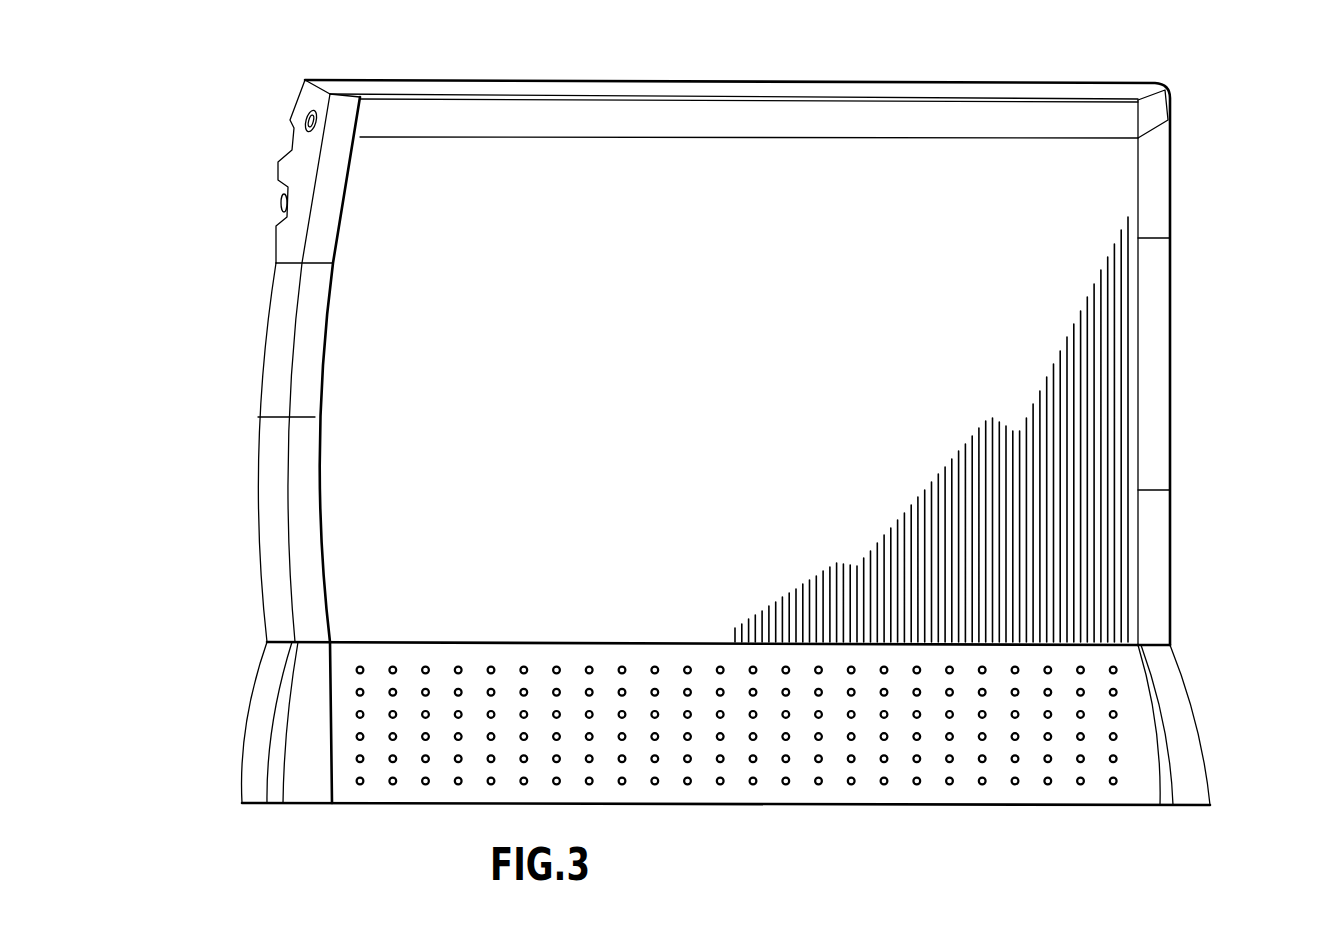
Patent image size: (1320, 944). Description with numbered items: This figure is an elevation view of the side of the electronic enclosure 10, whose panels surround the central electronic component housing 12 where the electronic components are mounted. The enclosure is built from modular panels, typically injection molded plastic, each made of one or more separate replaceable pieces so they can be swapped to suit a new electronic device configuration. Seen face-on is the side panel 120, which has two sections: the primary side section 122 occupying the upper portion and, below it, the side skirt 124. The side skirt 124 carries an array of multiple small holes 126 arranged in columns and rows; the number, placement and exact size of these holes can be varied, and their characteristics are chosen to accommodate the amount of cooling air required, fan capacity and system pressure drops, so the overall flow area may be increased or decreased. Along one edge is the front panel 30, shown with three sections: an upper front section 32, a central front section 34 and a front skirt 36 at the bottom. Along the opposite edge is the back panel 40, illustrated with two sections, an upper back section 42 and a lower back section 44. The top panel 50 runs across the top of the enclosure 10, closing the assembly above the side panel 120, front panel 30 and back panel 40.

The electronic enclosure 10 is at (1213, 68).
The central electronic component housing 12 is at (447, 163).
The front panel 30 is at (268, 476).
The upper front section 32 is at (297, 163).
The central front section 34 is at (258, 572).
The front skirt 36 is at (247, 740).
The back panel 40 is at (1178, 348).
The upper back section 42 is at (1157, 263).
The lower back section 44 is at (1157, 512).
The top panel 50 is at (695, 87).
The side panel 120 is at (848, 188).
The primary side section 122 is at (1122, 545).
The side skirt 124 is at (1148, 780).
The small holes 126 is at (717, 785).